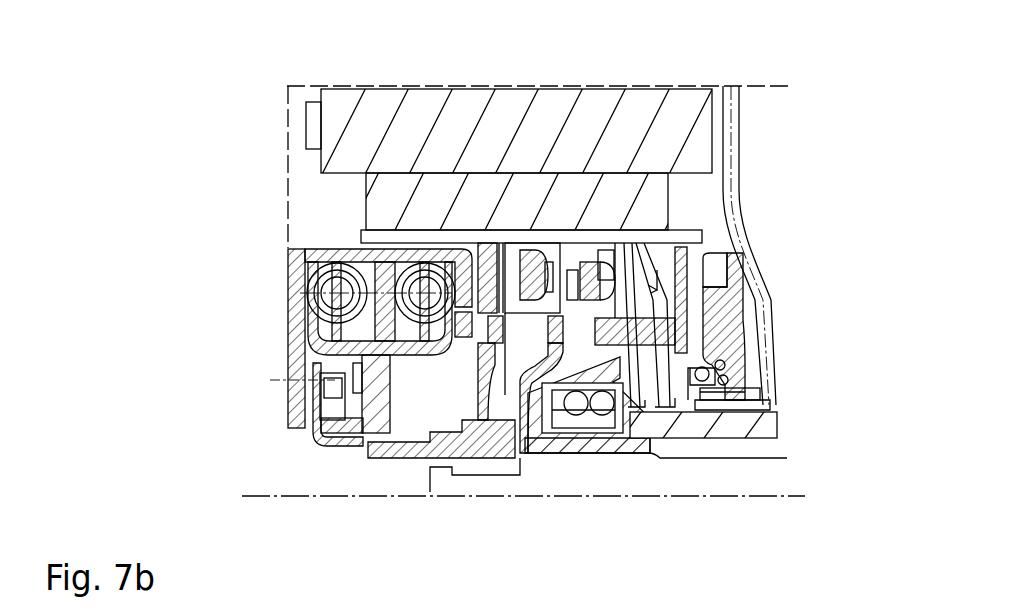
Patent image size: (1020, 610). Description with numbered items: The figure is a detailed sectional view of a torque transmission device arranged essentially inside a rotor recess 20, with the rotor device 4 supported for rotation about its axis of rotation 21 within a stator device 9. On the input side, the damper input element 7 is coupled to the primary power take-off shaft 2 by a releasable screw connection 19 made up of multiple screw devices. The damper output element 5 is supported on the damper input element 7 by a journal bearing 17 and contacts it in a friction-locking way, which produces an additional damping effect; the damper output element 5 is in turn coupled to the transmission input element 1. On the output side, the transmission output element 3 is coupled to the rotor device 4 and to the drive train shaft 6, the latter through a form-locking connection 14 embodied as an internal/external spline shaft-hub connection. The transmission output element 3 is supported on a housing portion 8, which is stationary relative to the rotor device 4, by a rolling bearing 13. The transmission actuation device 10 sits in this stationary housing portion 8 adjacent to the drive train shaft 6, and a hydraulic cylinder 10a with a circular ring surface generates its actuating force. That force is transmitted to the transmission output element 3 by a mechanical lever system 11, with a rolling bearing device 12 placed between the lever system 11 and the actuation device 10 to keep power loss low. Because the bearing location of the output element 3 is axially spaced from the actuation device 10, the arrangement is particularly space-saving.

The transmission input element 1 is at (513, 455).
The primary power take-off shaft 2 is at (300, 440).
The transmission output element 3 is at (700, 241).
The rotor device 4 is at (655, 200).
The damper output element 5 is at (312, 336).
The drive train shaft 6 is at (775, 450).
The damper input element 7 is at (292, 345).
The housing portion 8 is at (720, 290).
The stator device 9 is at (659, 123).
The transmission actuation device 10 is at (757, 381).
The hydraulic cylinder 10a is at (765, 396).
The mechanical lever system 11 is at (650, 245).
The rolling bearing device 12 is at (708, 412).
The rolling bearing 13 is at (592, 447).
The form-locking connection 14 is at (643, 455).
The journal bearing 17 is at (313, 452).
The screw connection 19 is at (308, 382).
The rotor recess 20 is at (287, 265).
The axis of rotation 21 is at (357, 497).